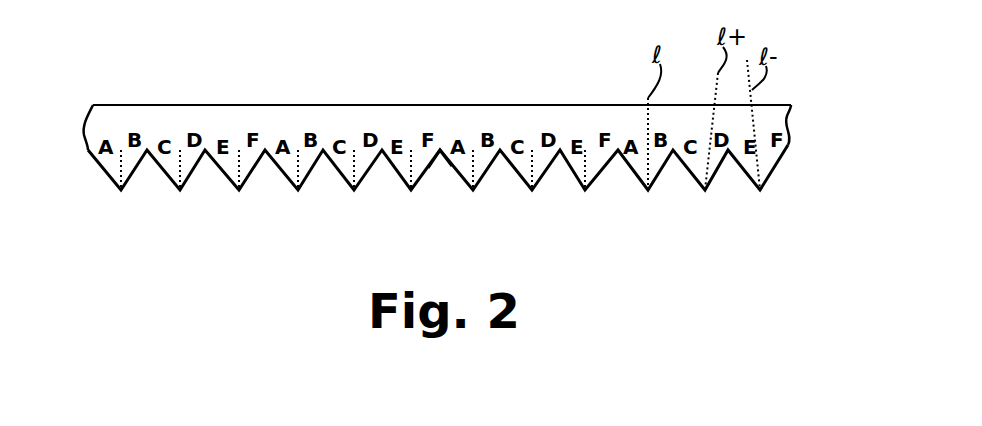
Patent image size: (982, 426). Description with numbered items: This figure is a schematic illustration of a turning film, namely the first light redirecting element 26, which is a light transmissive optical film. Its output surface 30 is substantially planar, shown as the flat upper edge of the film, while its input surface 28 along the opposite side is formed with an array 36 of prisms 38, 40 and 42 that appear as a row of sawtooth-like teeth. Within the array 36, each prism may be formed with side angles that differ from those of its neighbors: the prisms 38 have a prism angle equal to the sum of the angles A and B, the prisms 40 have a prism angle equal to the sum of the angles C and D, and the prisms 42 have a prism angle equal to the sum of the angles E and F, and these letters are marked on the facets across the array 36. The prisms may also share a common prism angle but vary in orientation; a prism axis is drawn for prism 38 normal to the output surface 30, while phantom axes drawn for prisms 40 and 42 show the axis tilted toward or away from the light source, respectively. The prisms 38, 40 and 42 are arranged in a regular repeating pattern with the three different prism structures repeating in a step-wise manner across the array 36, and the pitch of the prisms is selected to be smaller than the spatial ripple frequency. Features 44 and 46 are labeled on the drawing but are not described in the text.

The first light redirecting element 26 is at (779, 100).
The input surface 28 is at (122, 191).
The output surface 30 is at (578, 105).
The array 36 is at (218, 218).
The prism 38 is at (648, 190).
The prism 40 is at (705, 190).
The prism 42 is at (760, 190).
The groove 44 is at (473, 190).
The ridge 46 is at (440, 150).